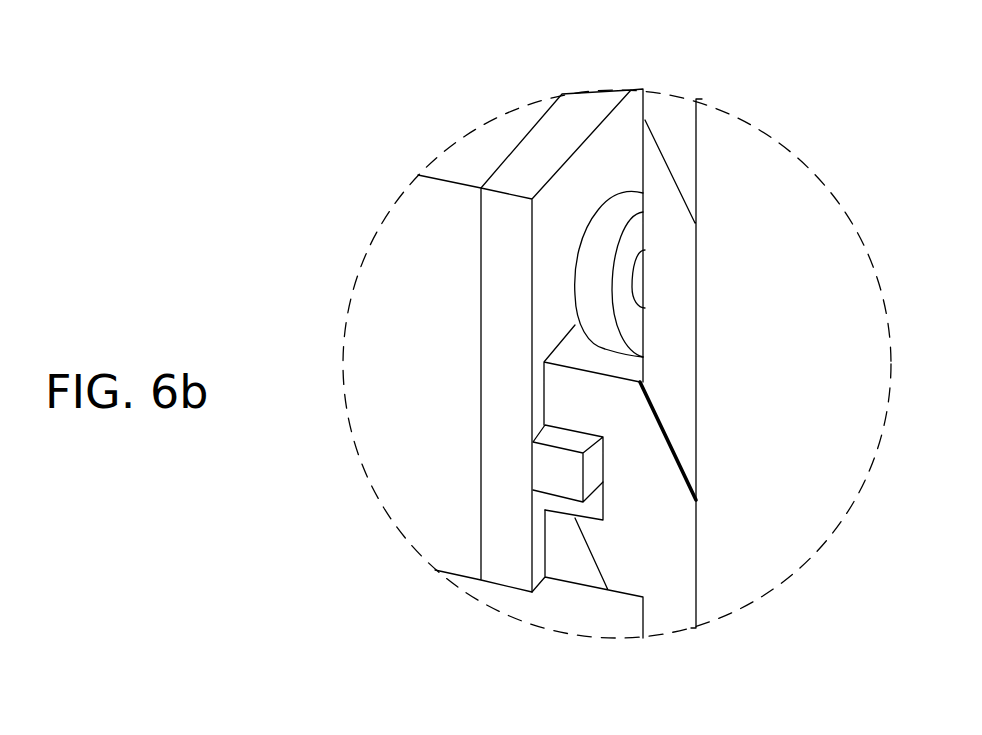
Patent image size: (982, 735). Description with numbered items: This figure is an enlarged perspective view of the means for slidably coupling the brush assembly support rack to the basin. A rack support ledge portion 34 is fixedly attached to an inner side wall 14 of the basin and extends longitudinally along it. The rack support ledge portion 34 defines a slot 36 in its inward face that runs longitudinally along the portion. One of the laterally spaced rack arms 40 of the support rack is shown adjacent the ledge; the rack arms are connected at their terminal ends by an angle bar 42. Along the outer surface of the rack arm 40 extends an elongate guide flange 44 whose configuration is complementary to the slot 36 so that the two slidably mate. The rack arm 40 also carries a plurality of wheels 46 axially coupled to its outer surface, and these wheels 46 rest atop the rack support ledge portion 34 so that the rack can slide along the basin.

The inner side wall 14 is at (821, 369).
The rack support ledge portion 34 is at (568, 567).
The slot 36 is at (603, 512).
The rack arm 40 is at (622, 153).
The angle bar 42 is at (412, 341).
The guide flange 44 is at (583, 477).
The wheel 46 is at (628, 262).